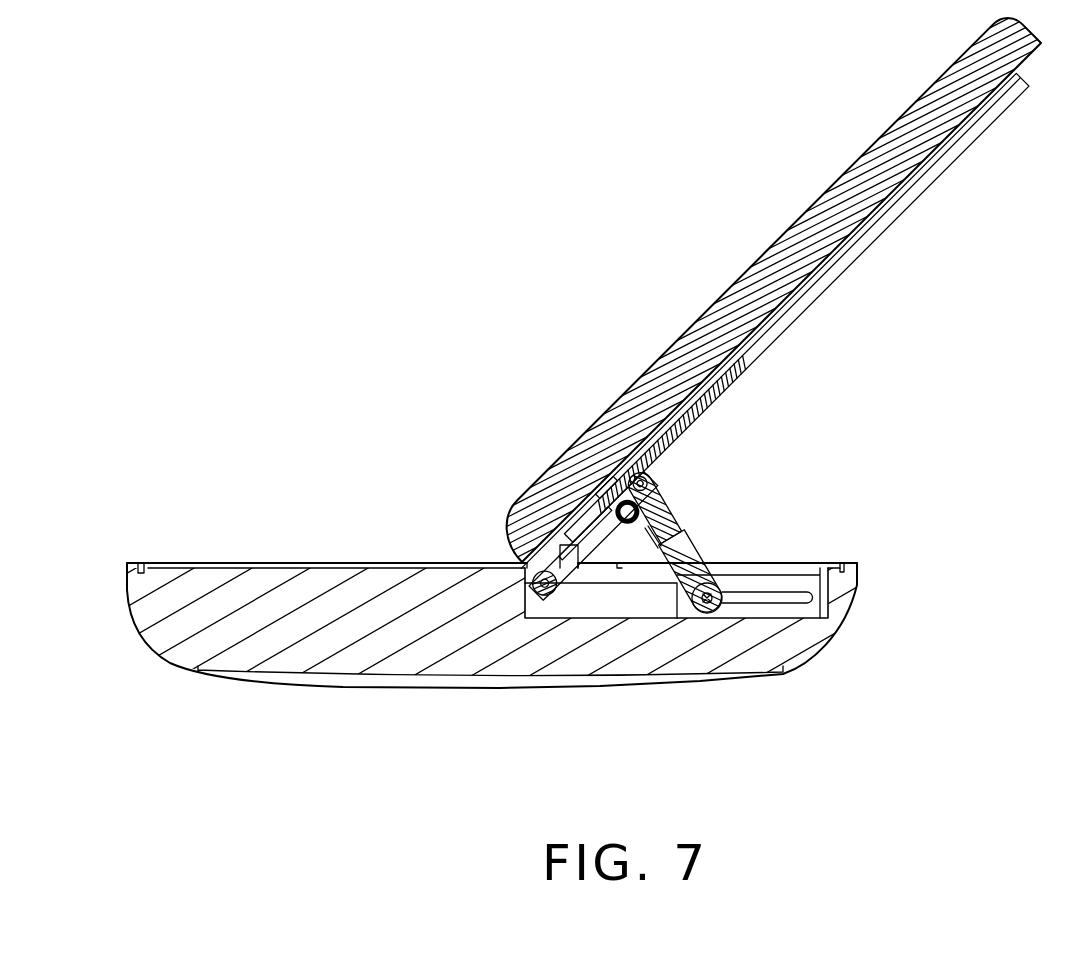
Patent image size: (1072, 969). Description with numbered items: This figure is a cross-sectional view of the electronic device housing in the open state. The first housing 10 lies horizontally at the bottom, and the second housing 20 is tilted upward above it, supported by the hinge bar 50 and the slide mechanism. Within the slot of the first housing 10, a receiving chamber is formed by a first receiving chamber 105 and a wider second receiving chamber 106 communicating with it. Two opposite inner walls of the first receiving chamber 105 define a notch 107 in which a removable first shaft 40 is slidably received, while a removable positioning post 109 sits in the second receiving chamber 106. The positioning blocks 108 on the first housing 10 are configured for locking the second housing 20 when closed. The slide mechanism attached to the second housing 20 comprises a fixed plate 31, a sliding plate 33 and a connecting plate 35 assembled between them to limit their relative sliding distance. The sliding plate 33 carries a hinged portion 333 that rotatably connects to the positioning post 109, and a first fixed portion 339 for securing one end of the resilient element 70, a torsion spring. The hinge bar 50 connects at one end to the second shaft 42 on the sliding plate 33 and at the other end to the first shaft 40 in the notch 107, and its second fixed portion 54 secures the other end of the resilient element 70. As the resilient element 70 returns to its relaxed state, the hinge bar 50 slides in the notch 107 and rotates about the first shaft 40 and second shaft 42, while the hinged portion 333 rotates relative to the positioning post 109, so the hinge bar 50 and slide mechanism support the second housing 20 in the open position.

The first housing 10 is at (363, 623).
The second housing 20 is at (907, 138).
The fixed plate 31 is at (703, 372).
The sliding plate 33 is at (580, 510).
The connecting plate 35 is at (680, 430).
The first shaft 40 is at (708, 605).
The second shaft 42 is at (648, 480).
The hinge bar 50 is at (690, 548).
The second fixed portion 54 is at (660, 493).
The resilient element 70 is at (620, 495).
The first receiving chamber 105 is at (762, 612).
The second receiving chamber 106 is at (627, 600).
The notch 107 is at (805, 605).
The positioning blocks 108 is at (520, 516).
The positioning post 109 is at (552, 590).
The hinged portion 333 is at (525, 572).
The first fixed portion 339 is at (605, 490).